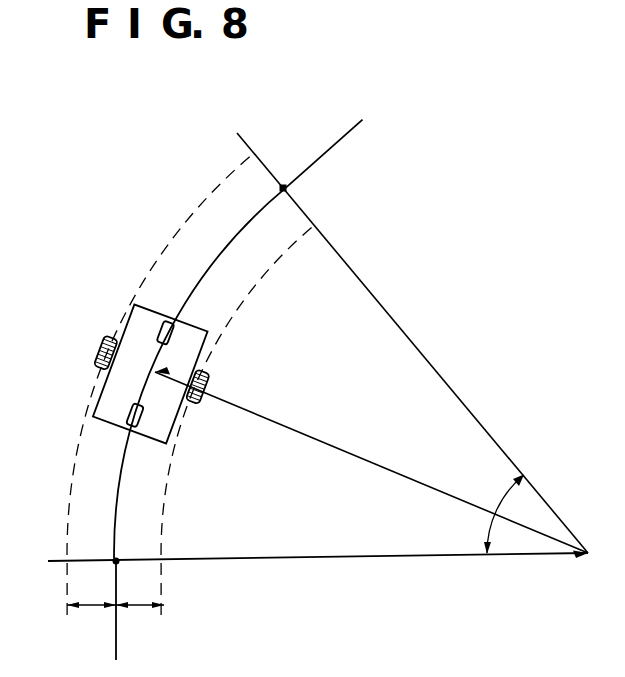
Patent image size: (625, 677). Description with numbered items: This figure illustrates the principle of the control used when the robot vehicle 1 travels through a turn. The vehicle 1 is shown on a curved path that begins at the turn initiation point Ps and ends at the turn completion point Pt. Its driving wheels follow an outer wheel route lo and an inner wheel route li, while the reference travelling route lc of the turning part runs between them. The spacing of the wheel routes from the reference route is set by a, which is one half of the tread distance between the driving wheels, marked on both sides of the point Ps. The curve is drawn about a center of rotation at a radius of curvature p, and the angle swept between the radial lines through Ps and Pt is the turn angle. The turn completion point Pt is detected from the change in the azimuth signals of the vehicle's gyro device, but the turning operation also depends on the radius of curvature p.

The robot vehicle 1 is at (105, 398).
The outer wheel route lo is at (160, 253).
The reference travelling route lc is at (203, 277).
The inner wheel route li is at (235, 313).
The turn completion point Pt is at (287, 188).
The turn initiation point Ps is at (120, 556).
The radius of curvature p is at (350, 453).
The half tread distance a is at (115, 592).